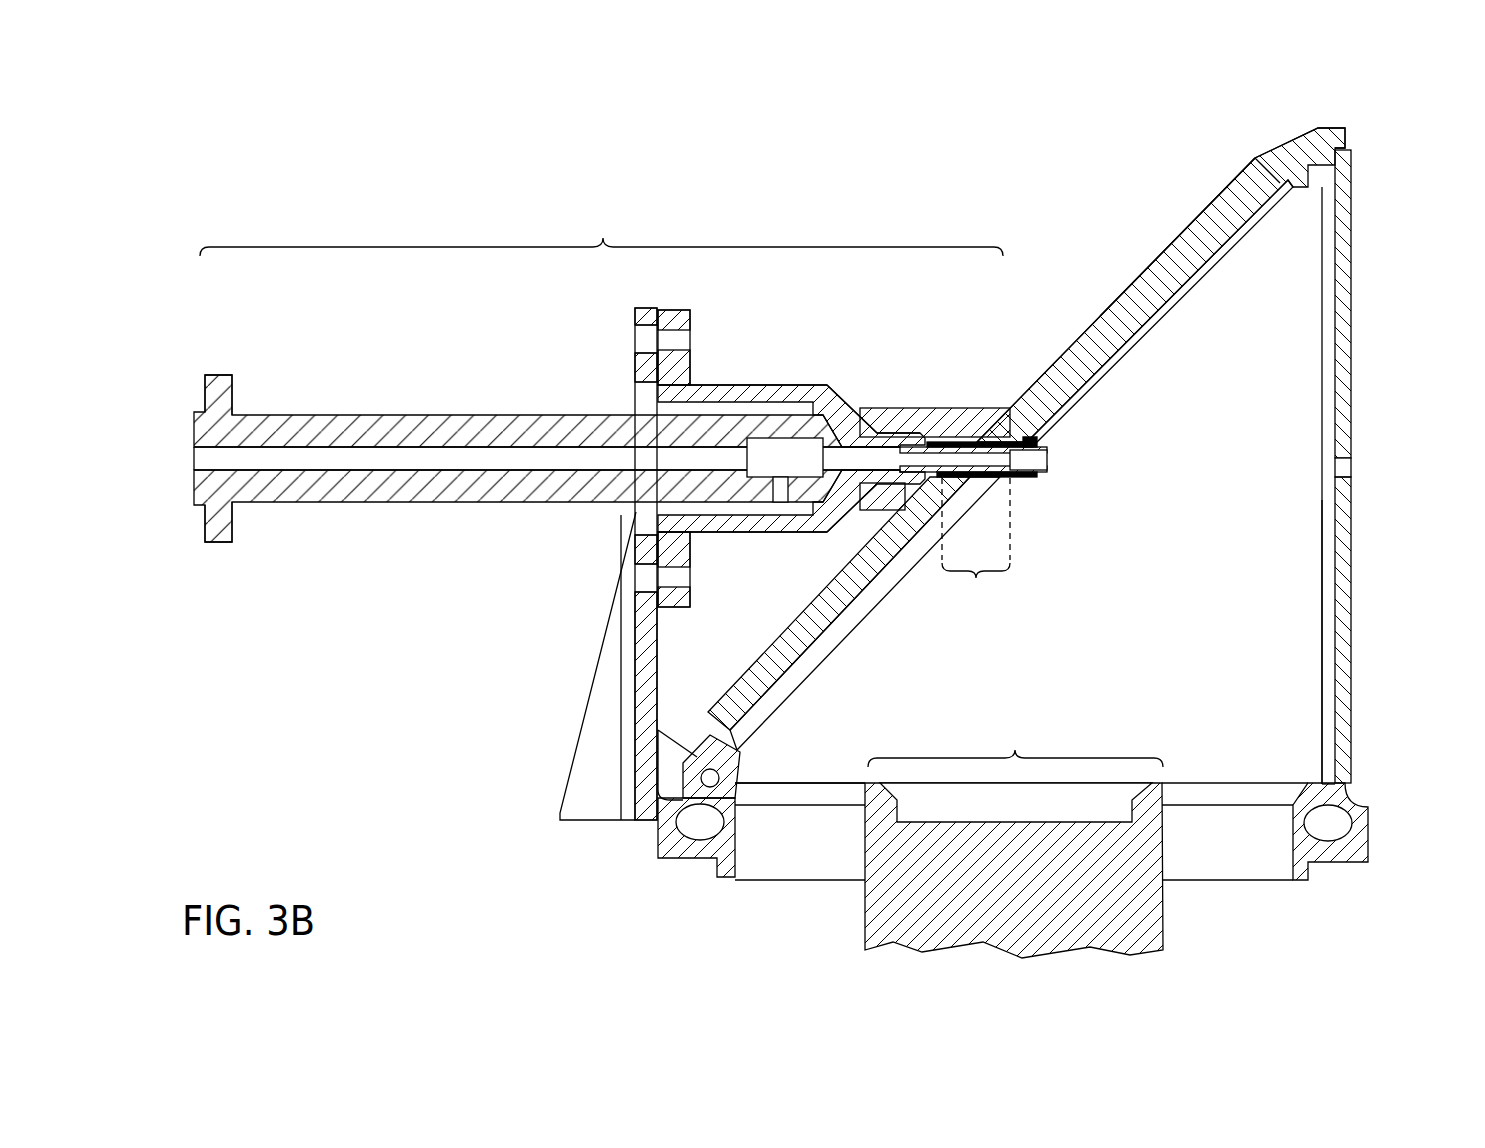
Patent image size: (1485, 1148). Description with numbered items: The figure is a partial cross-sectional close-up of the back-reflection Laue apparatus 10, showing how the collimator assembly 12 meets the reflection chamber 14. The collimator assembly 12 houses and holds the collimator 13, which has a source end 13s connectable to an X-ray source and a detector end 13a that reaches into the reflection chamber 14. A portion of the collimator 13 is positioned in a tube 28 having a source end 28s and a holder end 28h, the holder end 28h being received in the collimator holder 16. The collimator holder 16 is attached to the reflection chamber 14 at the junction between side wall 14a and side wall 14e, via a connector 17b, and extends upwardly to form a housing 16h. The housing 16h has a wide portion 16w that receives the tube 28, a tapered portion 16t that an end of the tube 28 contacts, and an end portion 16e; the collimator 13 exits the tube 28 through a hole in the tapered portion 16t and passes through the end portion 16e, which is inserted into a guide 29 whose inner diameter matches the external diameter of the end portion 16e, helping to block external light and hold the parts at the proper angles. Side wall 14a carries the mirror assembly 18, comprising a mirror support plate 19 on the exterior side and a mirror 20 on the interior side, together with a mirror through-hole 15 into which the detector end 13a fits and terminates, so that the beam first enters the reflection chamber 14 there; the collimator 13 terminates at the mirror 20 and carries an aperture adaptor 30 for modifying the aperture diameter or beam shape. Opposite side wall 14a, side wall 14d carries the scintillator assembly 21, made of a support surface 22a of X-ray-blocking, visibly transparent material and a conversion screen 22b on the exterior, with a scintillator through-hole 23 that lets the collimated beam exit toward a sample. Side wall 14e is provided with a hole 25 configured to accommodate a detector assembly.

The back-reflection Laue apparatus 10 is at (1007, 108).
The collimator assembly 12 is at (601, 233).
The collimator 13 is at (522, 458).
The detector end 13a is at (972, 455).
The source end 13s is at (194, 458).
The reflection chamber 14 is at (1183, 128).
The side wall 14a is at (1102, 363).
The side wall 14d is at (1342, 606).
The side wall 14e is at (1245, 795).
The mirror through-hole 15 is at (976, 538).
The collimator holder 16 is at (562, 703).
The end portion 16e is at (883, 440).
The housing 16h is at (745, 355).
The tapered portion 16t is at (843, 397).
The wide portion 16w is at (796, 385).
The connector 17b is at (652, 878).
The mirror assembly 18 is at (1100, 245).
The mirror support plate 19 is at (1250, 185).
The mirror 20 is at (1227, 253).
The scintillator assembly 21 is at (1370, 238).
The support surface 22a is at (1351, 180).
The conversion screen 22b is at (1351, 318).
The scintillator through-hole 23 is at (1372, 470).
The hole 25 is at (1014, 842).
The tube 28 is at (388, 430).
The holder end 28h is at (747, 487).
The source end 28s is at (207, 427).
The guide 29 is at (937, 420).
The aperture adaptor 30 is at (1047, 458).